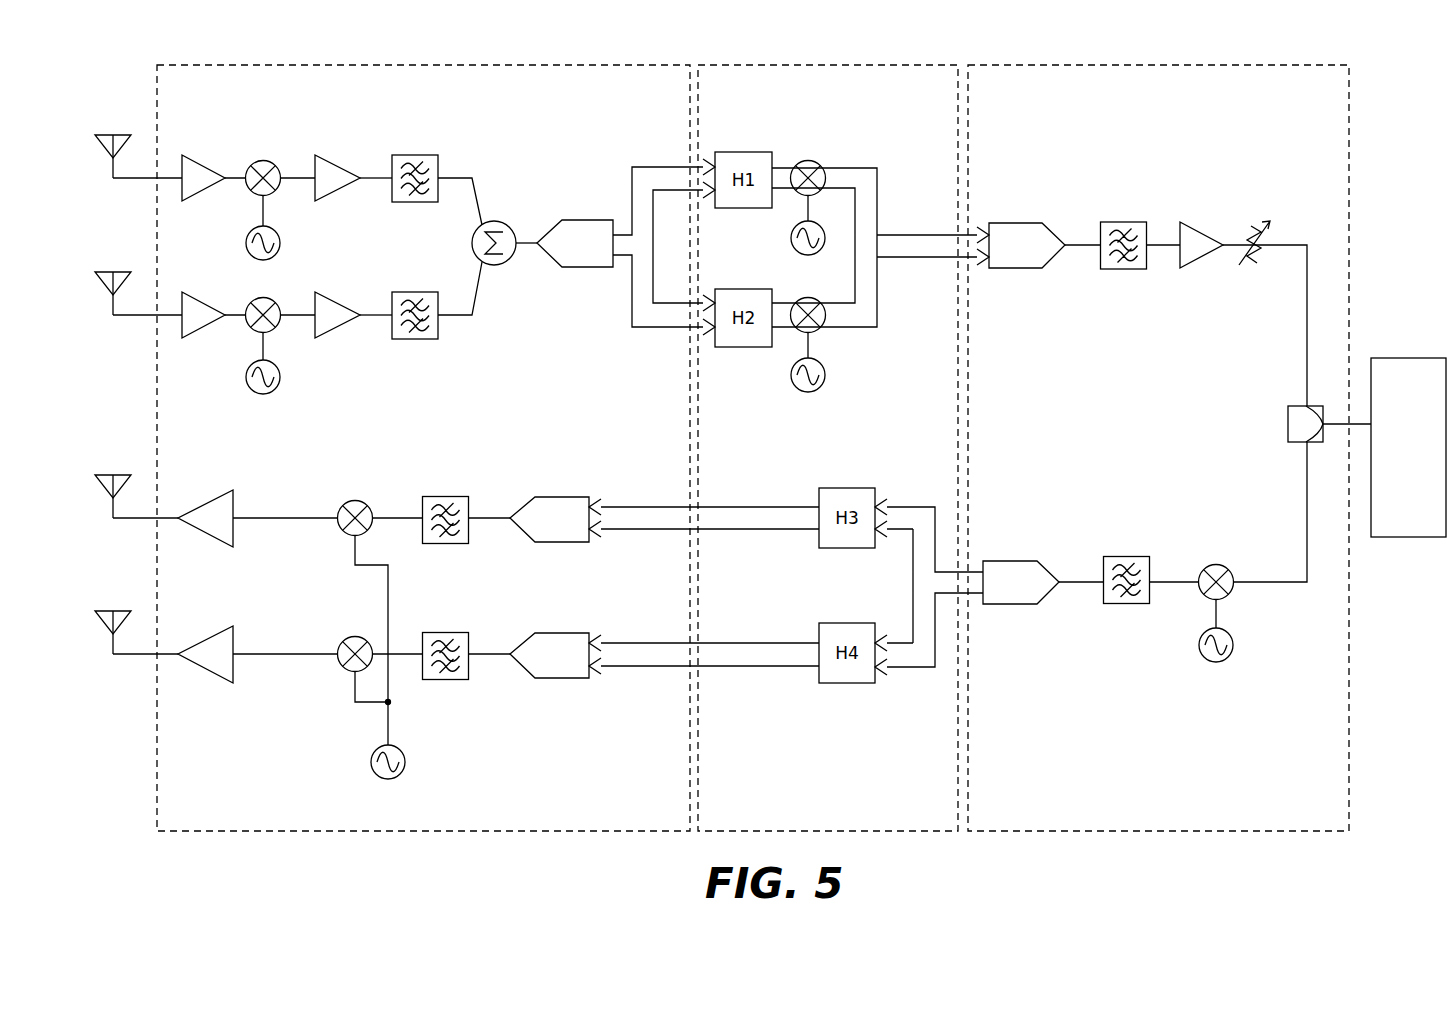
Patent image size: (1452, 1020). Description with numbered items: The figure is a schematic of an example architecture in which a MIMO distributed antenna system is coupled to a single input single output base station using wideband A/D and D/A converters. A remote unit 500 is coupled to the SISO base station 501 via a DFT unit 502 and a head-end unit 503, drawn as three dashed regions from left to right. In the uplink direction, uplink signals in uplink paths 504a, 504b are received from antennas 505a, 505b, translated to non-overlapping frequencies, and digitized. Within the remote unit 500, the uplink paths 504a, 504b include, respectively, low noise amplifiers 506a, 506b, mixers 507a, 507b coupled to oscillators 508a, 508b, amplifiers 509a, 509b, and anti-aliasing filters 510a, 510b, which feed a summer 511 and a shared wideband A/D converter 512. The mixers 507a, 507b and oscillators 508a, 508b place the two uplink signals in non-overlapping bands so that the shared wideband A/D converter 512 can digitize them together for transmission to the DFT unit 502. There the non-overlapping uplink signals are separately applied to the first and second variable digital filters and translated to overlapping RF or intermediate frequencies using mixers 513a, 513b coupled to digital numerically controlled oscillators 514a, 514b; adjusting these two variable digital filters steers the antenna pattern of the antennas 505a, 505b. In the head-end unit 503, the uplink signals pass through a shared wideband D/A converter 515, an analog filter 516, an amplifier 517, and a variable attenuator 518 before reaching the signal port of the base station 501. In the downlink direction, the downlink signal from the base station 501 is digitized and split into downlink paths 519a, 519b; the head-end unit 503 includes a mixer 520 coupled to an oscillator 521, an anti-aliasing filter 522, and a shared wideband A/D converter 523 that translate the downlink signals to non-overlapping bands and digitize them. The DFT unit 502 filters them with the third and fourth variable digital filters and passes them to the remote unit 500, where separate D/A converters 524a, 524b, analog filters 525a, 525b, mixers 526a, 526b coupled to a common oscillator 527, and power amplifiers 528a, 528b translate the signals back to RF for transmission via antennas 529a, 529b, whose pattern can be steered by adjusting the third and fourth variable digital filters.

The remote unit 500 is at (407, 65).
The SISO base station 501 is at (1425, 358).
The DFT unit 502 is at (749, 65).
The head-end unit 503 is at (1075, 65).
The uplink path 504a is at (144, 180).
The uplink path 504b is at (144, 317).
The antenna 505a is at (131, 134).
The antenna 505b is at (131, 271).
The low noise amplifier 506a is at (204, 156).
The low noise amplifier 506b is at (204, 293).
The mixer 507a is at (250, 168).
The mixer 507b is at (250, 305).
The oscillator 508a is at (281, 246).
The oscillator 508b is at (281, 380).
The amplifier 509a is at (346, 160).
The amplifier 509b is at (346, 297).
The anti-aliasing filter 510a is at (431, 155).
The anti-aliasing filter 510b is at (431, 292).
The summer 511 is at (513, 263).
The shared wideband A/D converter 512 is at (591, 219).
The mixer 513a is at (806, 161).
The mixer 513b is at (798, 300).
The digital numerically controlled oscillator 514a is at (791, 246).
The digital numerically controlled oscillator 514b is at (826, 381).
The shared wideband D/A converter 515 is at (1032, 222).
The analog filter 516 is at (1137, 222).
The amplifier 517 is at (1207, 225).
The variable attenuator 518 is at (1251, 228).
The downlink path 519a is at (144, 520).
The downlink path 519b is at (144, 656).
The mixer 520 is at (1210, 566).
The oscillator 521 is at (1234, 645).
The anti-aliasing filter 522 is at (1139, 556).
The shared wideband A/D converter 523 is at (997, 561).
The D/A converter 524a is at (566, 497).
The D/A converter 524b is at (566, 633).
The analog filter 525a is at (457, 497).
The analog filter 525b is at (457, 632).
The mixer 526a is at (341, 508).
The mixer 526b is at (341, 644).
The oscillator 527 is at (371, 762).
The power amplifier 528a is at (197, 502).
The power amplifier 528b is at (197, 637).
The antenna 529a is at (131, 476).
The antenna 529b is at (131, 612).